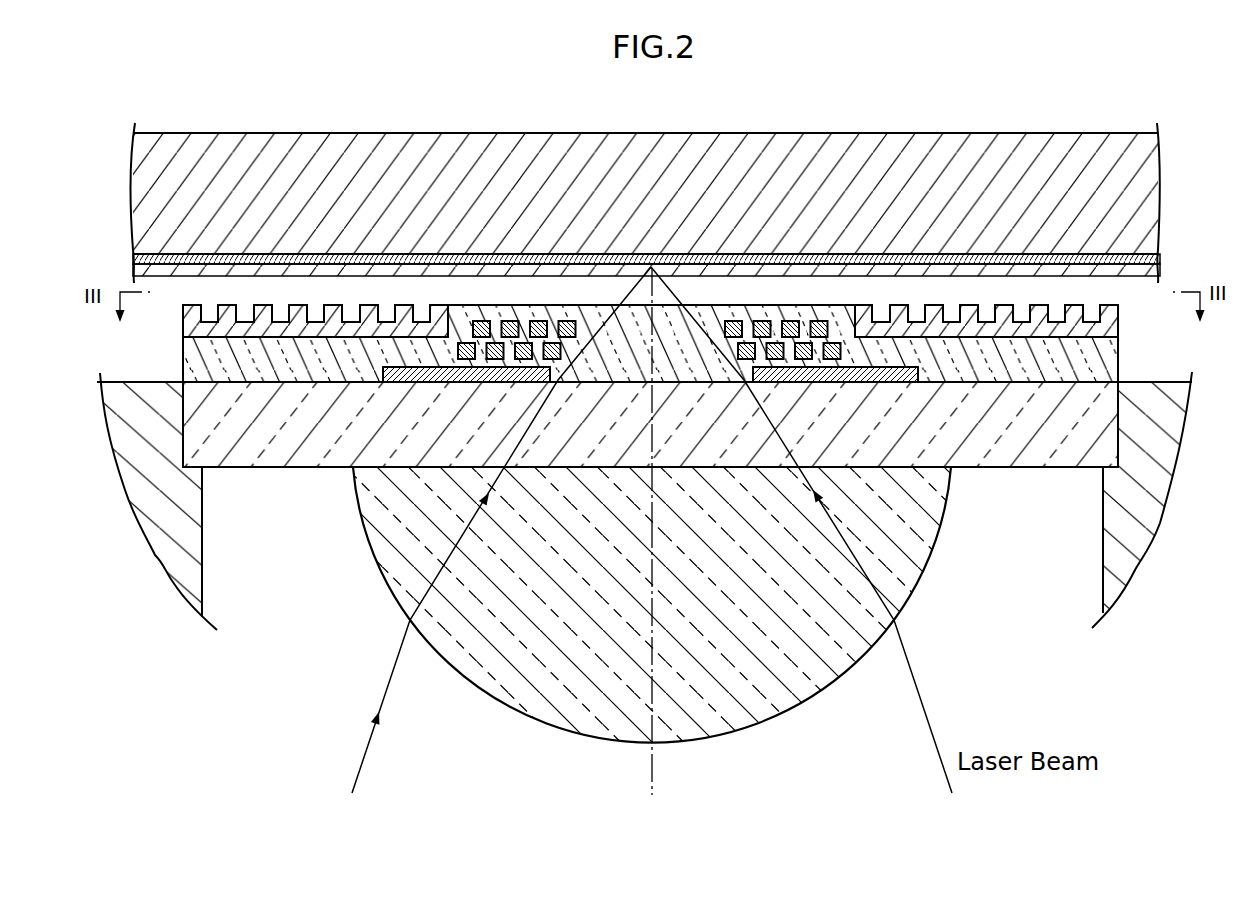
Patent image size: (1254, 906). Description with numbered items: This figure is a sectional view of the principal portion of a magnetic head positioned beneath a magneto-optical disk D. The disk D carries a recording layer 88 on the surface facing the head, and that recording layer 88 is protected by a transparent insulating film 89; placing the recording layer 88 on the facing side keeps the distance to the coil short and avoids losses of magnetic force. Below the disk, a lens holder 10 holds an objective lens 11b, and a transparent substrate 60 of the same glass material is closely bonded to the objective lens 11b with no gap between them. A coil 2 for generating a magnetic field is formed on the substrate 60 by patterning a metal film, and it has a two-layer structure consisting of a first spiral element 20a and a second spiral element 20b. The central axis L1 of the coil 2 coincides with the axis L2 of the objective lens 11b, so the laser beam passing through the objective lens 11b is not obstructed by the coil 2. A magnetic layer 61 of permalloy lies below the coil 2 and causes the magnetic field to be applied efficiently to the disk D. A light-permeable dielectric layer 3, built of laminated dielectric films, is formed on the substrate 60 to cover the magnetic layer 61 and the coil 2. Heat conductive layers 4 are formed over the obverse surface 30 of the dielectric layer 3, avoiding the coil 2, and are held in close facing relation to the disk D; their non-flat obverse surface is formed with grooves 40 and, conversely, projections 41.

The magneto-optical disk D is at (1113, 130).
The recording layer 88 is at (1158, 259).
The transparent insulating film 89 is at (1157, 270).
The heat conductive layers 4 is at (1108, 323).
The grooves 40 is at (281, 312).
The projections 41 is at (297, 312).
The obverse surface 30 is at (403, 336).
The dielectric layer 3 is at (1108, 361).
The coil 2 is at (792, 317).
The first spiral element 20a is at (832, 315).
The second spiral element 20b is at (845, 348).
The magnetic layer 61 is at (437, 384).
The transparent substrate 60 is at (1015, 452).
The objective lens 11b is at (932, 553).
The lens holder 10 is at (1116, 552).
The central axis of the coil L1 is at (652, 393).
The axis of the objective lens L2 is at (652, 765).